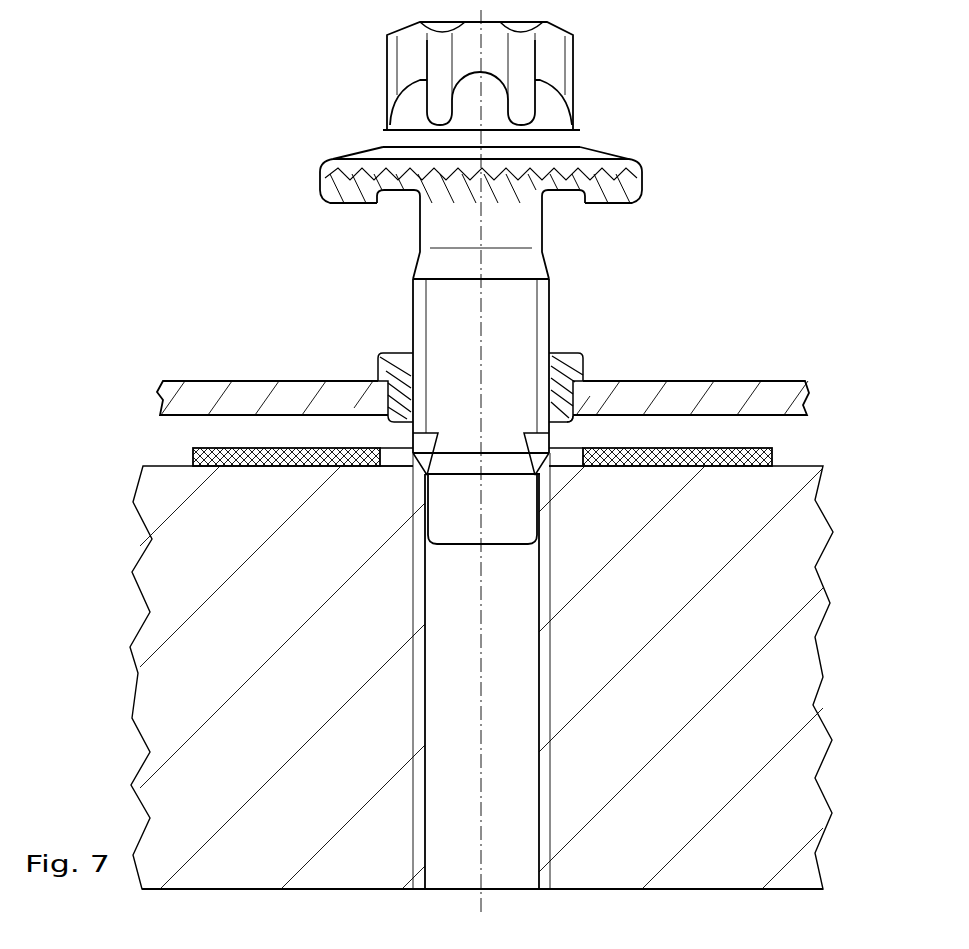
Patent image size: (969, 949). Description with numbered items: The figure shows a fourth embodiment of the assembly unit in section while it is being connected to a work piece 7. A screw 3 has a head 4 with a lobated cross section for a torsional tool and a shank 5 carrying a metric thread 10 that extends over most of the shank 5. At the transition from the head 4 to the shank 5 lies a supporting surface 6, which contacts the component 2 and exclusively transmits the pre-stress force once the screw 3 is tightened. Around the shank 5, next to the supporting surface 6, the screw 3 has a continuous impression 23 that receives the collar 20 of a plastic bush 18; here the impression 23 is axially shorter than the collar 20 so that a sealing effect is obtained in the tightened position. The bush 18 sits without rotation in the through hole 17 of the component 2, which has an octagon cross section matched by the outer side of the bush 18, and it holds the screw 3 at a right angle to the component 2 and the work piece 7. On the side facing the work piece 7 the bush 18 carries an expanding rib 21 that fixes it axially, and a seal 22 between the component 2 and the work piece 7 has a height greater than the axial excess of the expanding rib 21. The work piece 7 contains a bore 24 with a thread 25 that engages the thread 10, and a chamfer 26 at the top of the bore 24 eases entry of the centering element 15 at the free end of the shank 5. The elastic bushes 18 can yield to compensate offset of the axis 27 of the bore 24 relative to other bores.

The component 2 is at (739, 380).
The screw 3 is at (633, 110).
The head 4 is at (551, 68).
The shank 5 is at (449, 305).
The supporting surface 6 is at (608, 204).
The work piece 7 is at (765, 582).
The thread 10 is at (428, 323).
The centering element 15 is at (510, 513).
The through hole 17 is at (390, 397).
The bush 18 is at (579, 346).
The collar 20 is at (568, 373).
The expanding rib 21 is at (577, 421).
The seal 22 is at (747, 455).
The impression 23 is at (393, 197).
The bore 24 is at (539, 706).
The thread 25 is at (551, 728).
The chamfer 26 is at (438, 433).
The axis 27 is at (482, 760).